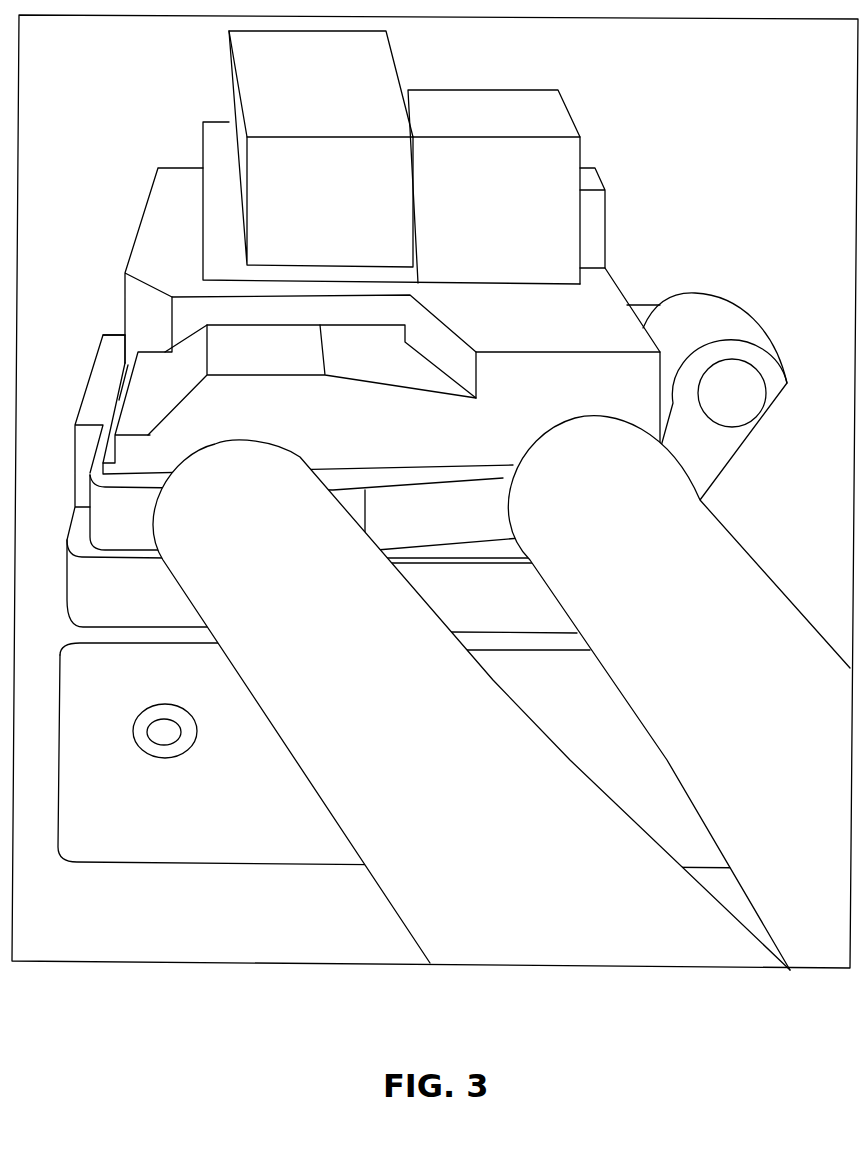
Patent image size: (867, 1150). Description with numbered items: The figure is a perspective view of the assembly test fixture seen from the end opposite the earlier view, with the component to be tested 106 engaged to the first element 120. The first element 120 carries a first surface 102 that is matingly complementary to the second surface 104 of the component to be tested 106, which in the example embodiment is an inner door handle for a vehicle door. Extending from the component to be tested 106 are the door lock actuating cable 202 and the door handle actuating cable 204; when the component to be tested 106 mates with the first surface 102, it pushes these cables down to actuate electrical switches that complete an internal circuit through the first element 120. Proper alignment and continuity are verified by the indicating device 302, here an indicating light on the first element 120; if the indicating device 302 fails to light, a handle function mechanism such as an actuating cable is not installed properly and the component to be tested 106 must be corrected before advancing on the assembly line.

The first surface 102 is at (103, 397).
The second surface 104 is at (118, 348).
The component to be tested 106 is at (605, 203).
The first element 120 is at (409, 768).
The door lock actuating cable 202 is at (724, 553).
The door handle actuating cable 204 is at (412, 625).
The indicating device 302 is at (165, 738).